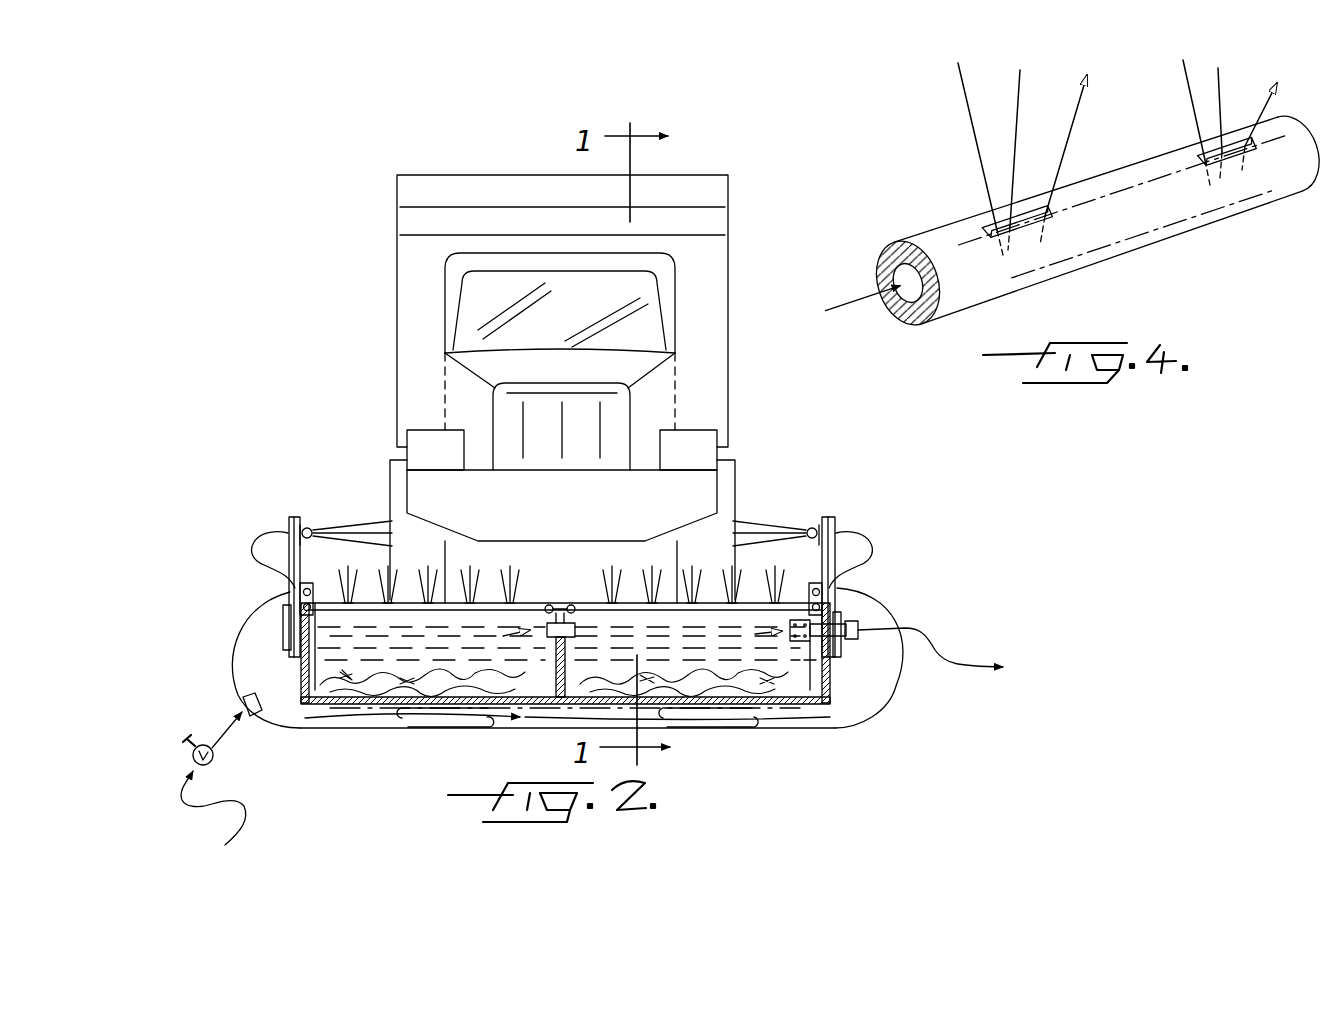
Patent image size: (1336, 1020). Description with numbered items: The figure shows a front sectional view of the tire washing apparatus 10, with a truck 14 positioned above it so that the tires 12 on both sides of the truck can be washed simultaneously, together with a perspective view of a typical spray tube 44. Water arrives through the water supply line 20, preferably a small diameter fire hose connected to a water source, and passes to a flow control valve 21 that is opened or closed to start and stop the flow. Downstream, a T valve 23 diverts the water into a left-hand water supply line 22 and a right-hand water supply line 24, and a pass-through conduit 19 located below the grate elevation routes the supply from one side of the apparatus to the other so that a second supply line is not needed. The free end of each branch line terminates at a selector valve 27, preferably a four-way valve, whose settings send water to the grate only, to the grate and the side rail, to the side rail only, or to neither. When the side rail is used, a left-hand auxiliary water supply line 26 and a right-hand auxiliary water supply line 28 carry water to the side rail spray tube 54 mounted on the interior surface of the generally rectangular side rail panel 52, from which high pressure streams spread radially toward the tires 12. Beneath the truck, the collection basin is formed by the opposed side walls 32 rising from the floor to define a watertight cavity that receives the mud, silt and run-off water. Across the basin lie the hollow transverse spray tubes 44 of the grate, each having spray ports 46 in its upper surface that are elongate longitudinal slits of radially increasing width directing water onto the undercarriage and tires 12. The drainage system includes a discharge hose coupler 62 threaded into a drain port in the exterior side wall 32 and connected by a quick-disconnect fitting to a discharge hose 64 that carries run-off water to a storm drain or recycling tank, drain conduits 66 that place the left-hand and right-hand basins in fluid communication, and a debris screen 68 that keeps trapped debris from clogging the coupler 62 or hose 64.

In FIG. 2, the apparatus 10 is at (293, 458).
In FIG. 2, the tires 12 is at (390, 468).
In FIG. 2, the truck 14 is at (397, 247).
In FIG. 2, the pass-through conduit 19 is at (420, 730).
In FIG. 2, the water supply line 20 is at (248, 816).
In FIG. 2, the flow control valve 21 is at (215, 752).
In FIG. 2, the left-hand water supply line 22 is at (877, 707).
In FIG. 2, the T valve 23 is at (240, 705).
In FIG. 2, the right-hand water supply line 24 is at (245, 645).
In FIG. 2, the left-hand auxiliary water supply line 26 is at (866, 529).
In FIG. 2, the selector valve 27 is at (296, 591).
In FIG. 2, the right-hand auxiliary water supply line 28 is at (281, 541).
In FIG. 2, the side walls 32 is at (290, 662).
In FIG. 2, the spray tubes 44 is at (587, 603).
In FIG. 4, the spray tubes 44 is at (1186, 222).
In FIG. 2, the spray ports 46 is at (470, 606).
In FIG. 4, the spray ports 46 is at (1000, 222).
In FIG. 2, the side rail panel 52 is at (288, 524).
In FIG. 2, the side rail spray tube 54 is at (312, 528).
In FIG. 2, the discharge hose coupler 62 is at (856, 626).
In FIG. 2, the discharge hose 64 is at (938, 640).
In FIG. 2, the drain conduits 66 is at (570, 636).
In FIG. 2, the debris screen 68 is at (802, 637).